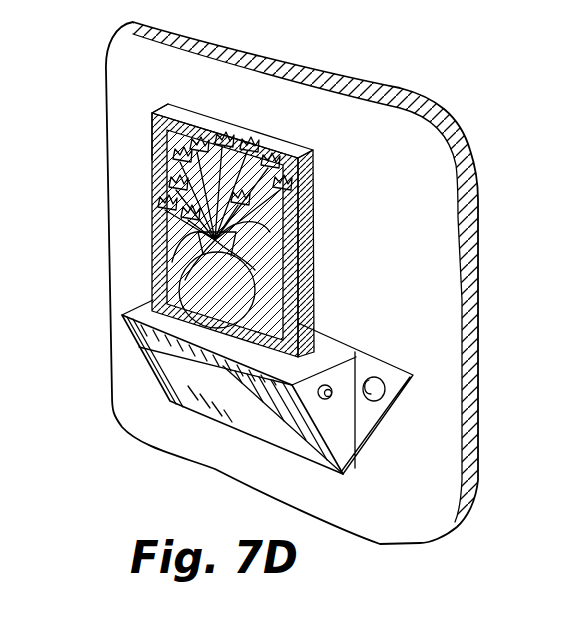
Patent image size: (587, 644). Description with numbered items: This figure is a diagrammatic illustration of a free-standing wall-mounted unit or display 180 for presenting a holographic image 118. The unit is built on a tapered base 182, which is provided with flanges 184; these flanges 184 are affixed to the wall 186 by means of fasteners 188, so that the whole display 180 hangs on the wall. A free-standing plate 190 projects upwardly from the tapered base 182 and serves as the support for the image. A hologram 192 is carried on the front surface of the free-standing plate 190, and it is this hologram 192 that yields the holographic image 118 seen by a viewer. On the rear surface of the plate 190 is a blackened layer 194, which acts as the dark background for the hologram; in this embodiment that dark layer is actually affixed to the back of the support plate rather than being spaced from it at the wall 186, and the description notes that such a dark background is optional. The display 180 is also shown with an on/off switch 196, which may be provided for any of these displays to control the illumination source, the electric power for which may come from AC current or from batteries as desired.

The holographic image 118 is at (200, 290).
The free-standing wall-mounted unit or display 180 is at (280, 377).
The tapered base 182 is at (243, 435).
The flanges 184 is at (383, 432).
The wall 186 is at (410, 517).
The fasteners 188 is at (375, 376).
The free-standing plate 190 is at (215, 208).
The hologram 192 is at (153, 122).
The blackened layer 194 is at (308, 179).
The on/off switch 196 is at (329, 384).